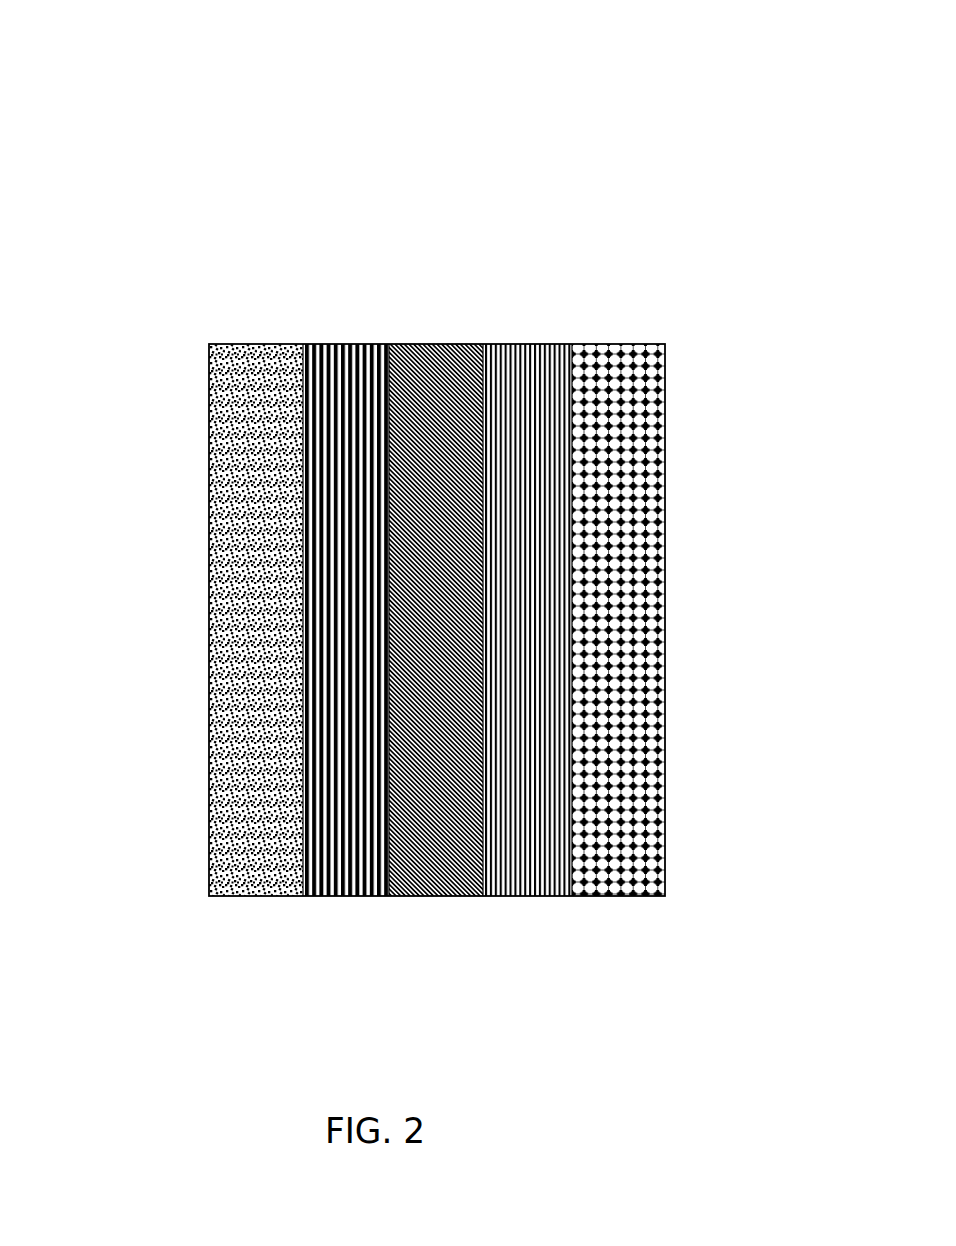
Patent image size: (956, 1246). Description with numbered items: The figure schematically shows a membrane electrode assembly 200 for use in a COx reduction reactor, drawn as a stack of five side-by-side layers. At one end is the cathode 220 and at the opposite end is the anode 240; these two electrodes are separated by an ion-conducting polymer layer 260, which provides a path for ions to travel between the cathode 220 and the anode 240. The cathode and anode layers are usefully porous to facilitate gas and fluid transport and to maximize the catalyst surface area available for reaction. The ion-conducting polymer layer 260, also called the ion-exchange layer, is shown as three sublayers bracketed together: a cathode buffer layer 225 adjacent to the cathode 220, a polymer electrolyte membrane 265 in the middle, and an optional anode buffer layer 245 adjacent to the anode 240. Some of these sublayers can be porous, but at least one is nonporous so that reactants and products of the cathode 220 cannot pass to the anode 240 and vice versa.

The membrane electrode assembly 200 is at (243, 129).
The cathode 220 is at (232, 490).
The cathode buffer layer 225 is at (353, 840).
The anode 240 is at (640, 478).
The anode buffer layer 245 is at (510, 840).
The ion-conducting polymer layer 260 is at (568, 328).
The polymer electrolyte membrane 265 is at (427, 843).